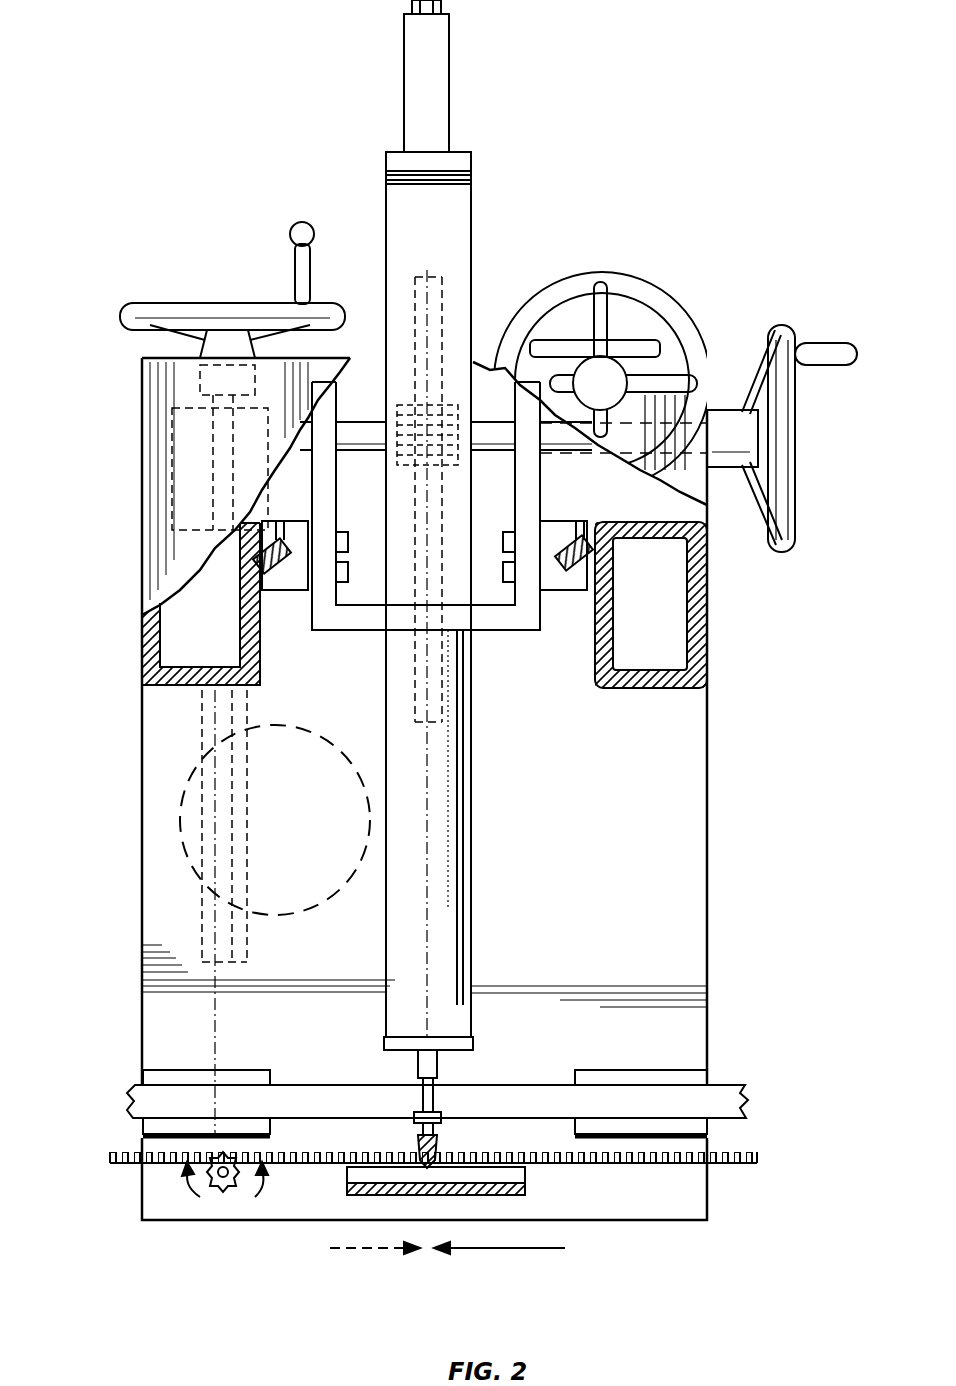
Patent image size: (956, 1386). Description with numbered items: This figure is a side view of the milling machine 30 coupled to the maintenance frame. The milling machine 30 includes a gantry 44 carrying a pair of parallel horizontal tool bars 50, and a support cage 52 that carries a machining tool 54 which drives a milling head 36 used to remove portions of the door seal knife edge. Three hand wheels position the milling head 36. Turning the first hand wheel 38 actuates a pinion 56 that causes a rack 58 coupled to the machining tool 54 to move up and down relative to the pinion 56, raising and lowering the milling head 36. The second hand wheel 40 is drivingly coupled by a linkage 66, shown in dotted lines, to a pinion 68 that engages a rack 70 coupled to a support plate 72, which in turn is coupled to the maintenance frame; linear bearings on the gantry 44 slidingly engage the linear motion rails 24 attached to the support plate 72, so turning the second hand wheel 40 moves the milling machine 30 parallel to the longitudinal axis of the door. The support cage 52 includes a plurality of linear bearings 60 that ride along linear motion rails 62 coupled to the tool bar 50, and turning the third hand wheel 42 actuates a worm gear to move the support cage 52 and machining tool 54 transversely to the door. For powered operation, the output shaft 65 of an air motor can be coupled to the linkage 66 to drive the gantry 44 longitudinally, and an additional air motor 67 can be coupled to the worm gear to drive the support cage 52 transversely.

The linear motion rail 24 is at (145, 1100).
The milling machine 30 is at (550, 238).
The milling head 36 is at (437, 1152).
The first hand wheel 38 is at (781, 330).
The second hand wheel 40 is at (222, 303).
The third hand wheel 42 is at (627, 284).
The gantry 44 is at (714, 618).
The tool bar 50 is at (185, 685).
The support cage 52 is at (493, 622).
The machining tool 54 is at (445, 830).
The pinion 56 is at (396, 476).
The rack 58 is at (440, 293).
The linear bearing 60 is at (294, 582).
The linear motion rail 62 is at (278, 540).
The output shaft 65 is at (313, 752).
The linkage 66 is at (232, 1033).
The air motor 67 is at (640, 343).
The pinion 68 is at (221, 1190).
The rack 70 is at (608, 1160).
The support plate 72 is at (252, 1072).